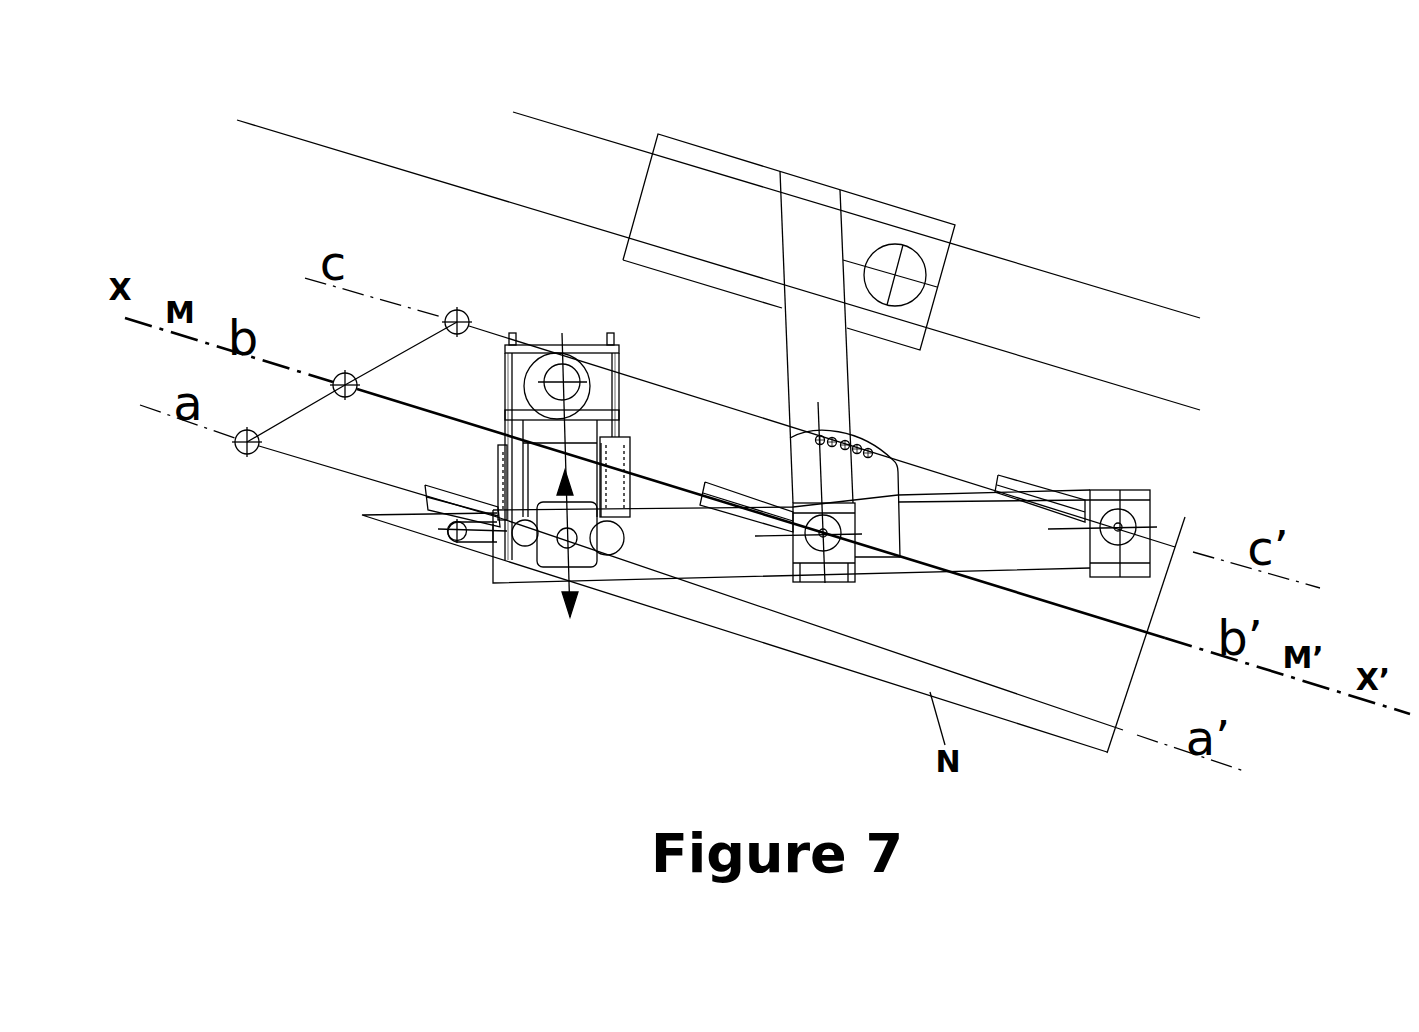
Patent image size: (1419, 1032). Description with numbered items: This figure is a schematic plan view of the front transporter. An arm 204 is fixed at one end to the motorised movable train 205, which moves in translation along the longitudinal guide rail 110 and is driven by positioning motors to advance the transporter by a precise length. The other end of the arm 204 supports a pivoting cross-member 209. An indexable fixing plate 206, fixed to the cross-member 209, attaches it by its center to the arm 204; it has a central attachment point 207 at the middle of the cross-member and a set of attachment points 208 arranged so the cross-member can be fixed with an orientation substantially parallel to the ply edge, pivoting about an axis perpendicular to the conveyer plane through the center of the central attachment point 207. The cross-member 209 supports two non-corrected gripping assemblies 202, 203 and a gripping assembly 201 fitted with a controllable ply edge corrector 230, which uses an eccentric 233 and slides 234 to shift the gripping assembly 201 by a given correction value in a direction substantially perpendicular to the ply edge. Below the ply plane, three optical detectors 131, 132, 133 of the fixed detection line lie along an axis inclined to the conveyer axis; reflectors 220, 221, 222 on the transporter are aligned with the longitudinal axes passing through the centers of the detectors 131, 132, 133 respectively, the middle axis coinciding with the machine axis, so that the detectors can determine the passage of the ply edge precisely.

The longitudinal guide rail 110 is at (1057, 322).
The optical detector 131 is at (237, 452).
The central optical detector 132 is at (342, 373).
The optical detector 133 is at (448, 312).
The gripping assembly 201 is at (508, 565).
The non-corrected gripping assembly 202 is at (813, 567).
The non-corrected gripping assembly 203 is at (1105, 557).
The arm 204 is at (817, 352).
The motorised movable train 205 is at (873, 213).
The indexable fixing plate 206 is at (883, 463).
The central attachment point 207 is at (826, 552).
The attachment points 208 is at (869, 413).
The cross-member 209 is at (716, 543).
The reflector 220 is at (430, 487).
The reflector 221 is at (702, 482).
The reflector 222 is at (1002, 475).
The ply edge corrector 230 is at (585, 322).
The eccentric 233 is at (551, 372).
The slides 234 is at (503, 373).